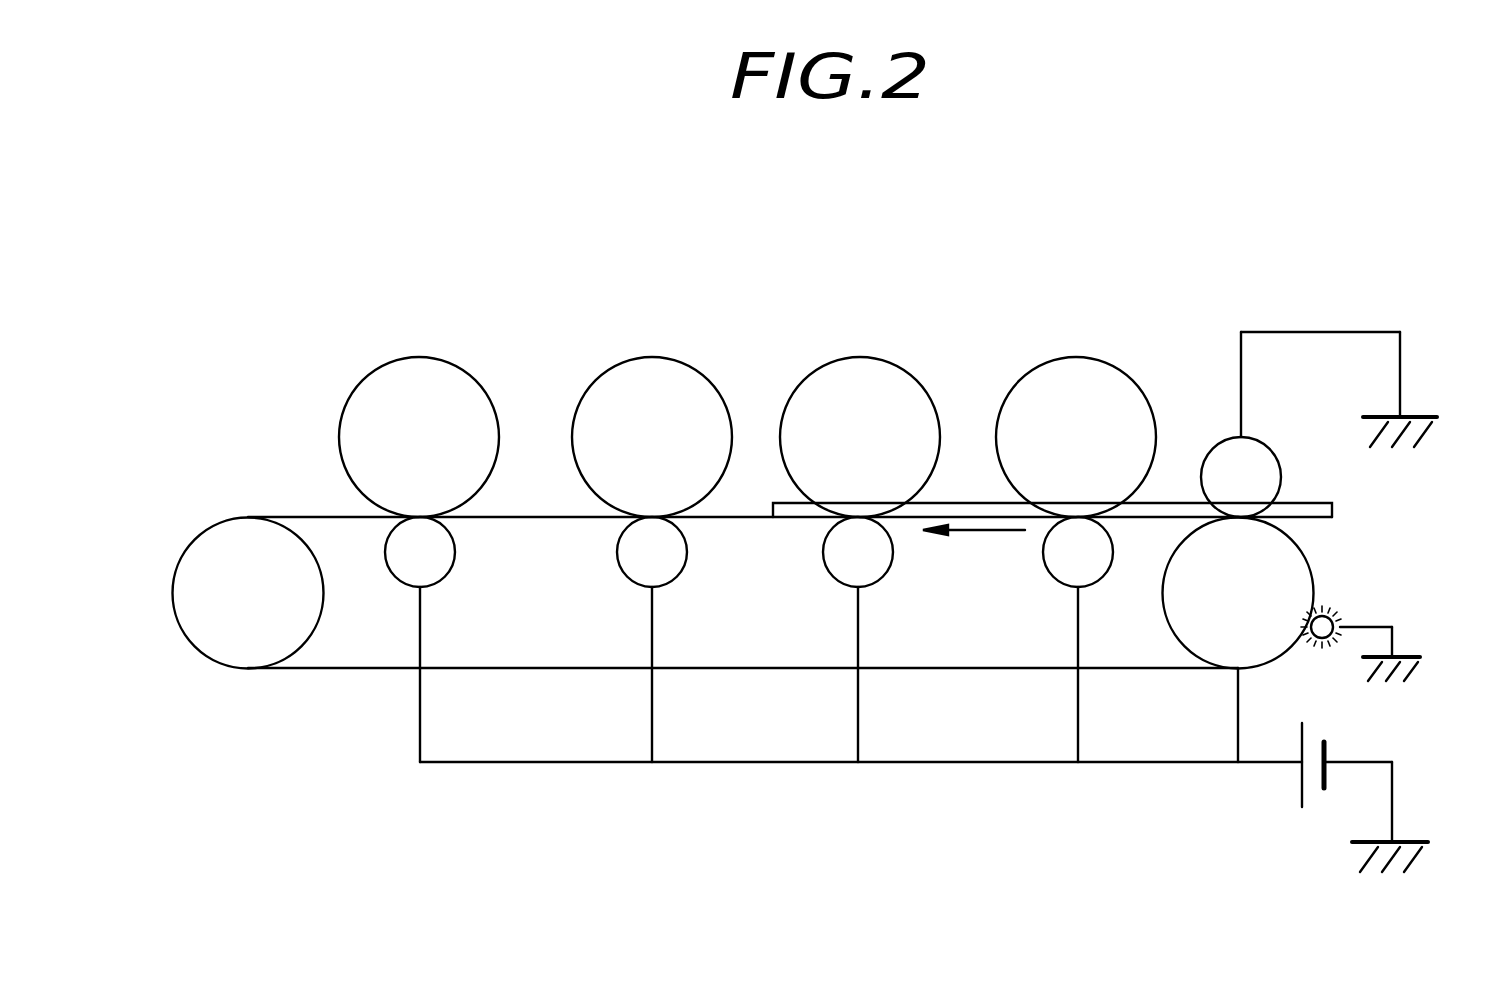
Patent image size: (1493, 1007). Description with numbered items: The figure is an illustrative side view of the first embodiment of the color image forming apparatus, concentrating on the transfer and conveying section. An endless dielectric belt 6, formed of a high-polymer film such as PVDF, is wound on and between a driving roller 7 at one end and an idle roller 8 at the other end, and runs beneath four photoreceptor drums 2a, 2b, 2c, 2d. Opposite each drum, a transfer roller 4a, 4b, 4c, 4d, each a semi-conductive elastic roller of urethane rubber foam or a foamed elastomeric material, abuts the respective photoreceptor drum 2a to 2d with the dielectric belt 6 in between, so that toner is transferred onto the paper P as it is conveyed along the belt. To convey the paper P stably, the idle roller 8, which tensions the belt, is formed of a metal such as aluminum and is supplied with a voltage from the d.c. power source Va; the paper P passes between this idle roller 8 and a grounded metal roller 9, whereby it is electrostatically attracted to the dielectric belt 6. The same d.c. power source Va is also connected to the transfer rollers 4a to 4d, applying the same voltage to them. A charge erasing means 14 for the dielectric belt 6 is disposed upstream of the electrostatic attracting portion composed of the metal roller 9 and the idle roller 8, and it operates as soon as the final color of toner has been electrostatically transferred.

The photoreceptor drum 2a is at (1083, 367).
The photoreceptor drum 2b is at (880, 360).
The photoreceptor drum 2c is at (658, 360).
The photoreceptor drum 2d is at (438, 360).
The transfer roller 4a is at (1072, 568).
The transfer roller 4b is at (850, 567).
The transfer roller 4c is at (645, 567).
The transfer roller 4d is at (413, 567).
The endless dielectric belt 6 is at (353, 667).
The driving roller 7 is at (250, 647).
The idle roller 8 is at (1233, 652).
The metal roller 9 is at (1257, 452).
The charge erasing means 14 is at (1340, 603).
The paper P is at (1335, 510).
The d.c. power source Va is at (1293, 793).